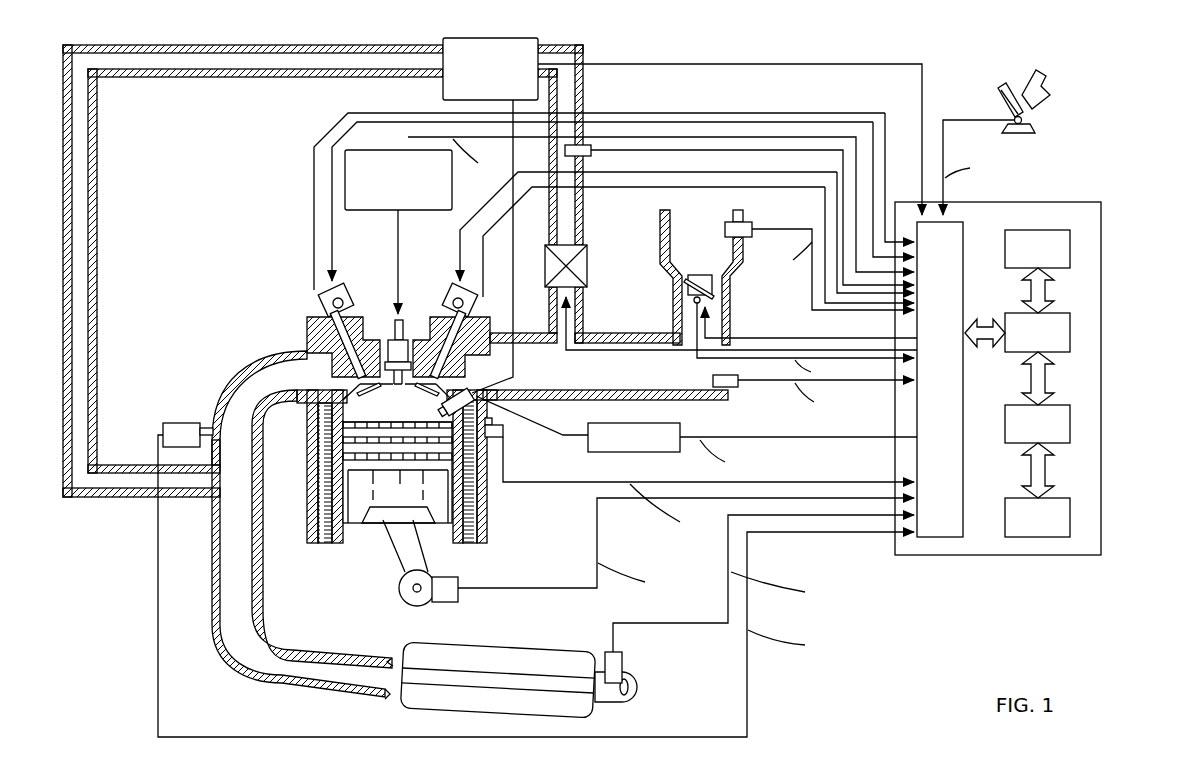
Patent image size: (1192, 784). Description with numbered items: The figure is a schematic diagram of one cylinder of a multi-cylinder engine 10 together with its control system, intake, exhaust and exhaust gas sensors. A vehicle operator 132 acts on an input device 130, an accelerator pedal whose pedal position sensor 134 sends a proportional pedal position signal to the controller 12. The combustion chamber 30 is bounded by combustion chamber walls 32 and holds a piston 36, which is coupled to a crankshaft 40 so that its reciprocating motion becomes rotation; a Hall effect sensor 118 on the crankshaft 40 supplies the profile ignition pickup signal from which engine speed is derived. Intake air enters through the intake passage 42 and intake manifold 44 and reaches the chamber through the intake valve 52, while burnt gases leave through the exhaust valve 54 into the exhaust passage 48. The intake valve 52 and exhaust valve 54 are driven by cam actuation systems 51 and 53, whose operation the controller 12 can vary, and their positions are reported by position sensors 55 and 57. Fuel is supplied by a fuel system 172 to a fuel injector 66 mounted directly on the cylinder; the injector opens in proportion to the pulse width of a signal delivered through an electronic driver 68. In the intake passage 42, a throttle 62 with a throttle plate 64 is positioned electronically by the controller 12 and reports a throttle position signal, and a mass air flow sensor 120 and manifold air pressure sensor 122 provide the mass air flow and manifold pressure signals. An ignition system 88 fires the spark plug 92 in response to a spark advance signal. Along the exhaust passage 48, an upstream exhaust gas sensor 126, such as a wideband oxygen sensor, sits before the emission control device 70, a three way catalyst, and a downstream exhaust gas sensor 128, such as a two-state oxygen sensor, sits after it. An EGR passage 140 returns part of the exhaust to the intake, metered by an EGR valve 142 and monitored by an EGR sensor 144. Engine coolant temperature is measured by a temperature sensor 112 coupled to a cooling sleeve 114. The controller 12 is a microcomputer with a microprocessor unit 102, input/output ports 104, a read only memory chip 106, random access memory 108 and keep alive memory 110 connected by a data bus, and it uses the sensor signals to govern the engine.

The engine 10 is at (243, 270).
The controller 12 is at (1097, 204).
The combustion chamber 30 is at (395, 407).
The combustion chamber walls 32 is at (338, 545).
The piston 36 is at (385, 530).
The crankshaft 40 is at (403, 604).
The intake passage 42 is at (689, 251).
The intake manifold 44 is at (628, 379).
The exhaust passage 48 is at (263, 389).
The cam actuation system 51 is at (450, 287).
The intake valve 52 is at (445, 381).
The cam actuation system 53 is at (350, 287).
The exhaust valve 54 is at (307, 350).
The position sensor 55 is at (473, 292).
The position sensor 57 is at (322, 303).
The throttle 62 is at (716, 286).
The throttle plate 64 is at (689, 284).
The fuel injector 66 is at (493, 411).
The electronic driver 68 is at (601, 452).
The emission control device 70 is at (560, 650).
The ignition system 88 is at (357, 154).
The spark plug 92 is at (404, 322).
The microprocessor unit 102 is at (1070, 331).
The input/output ports 104 is at (965, 228).
The read only memory chip 106 is at (1070, 247).
The random access memory 108 is at (1070, 427).
The keep alive memory 110 is at (1070, 514).
The temperature sensor 112 is at (495, 428).
The cooling sleeve 114 is at (490, 503).
The Hall effect sensor 118 is at (460, 604).
The mass air flow sensor 120 is at (746, 222).
The manifold air pressure sensor 122 is at (740, 388).
The upstream exhaust gas sensor 126 is at (163, 428).
The downstream exhaust gas sensor 128 is at (625, 660).
The input device 130 is at (1000, 100).
The vehicle operator 132 is at (1050, 92).
The pedal position sensor 134 is at (1030, 121).
The EGR passage 140 is at (312, 46).
The EGR valve 142 is at (587, 268).
The EGR sensor 144 is at (586, 158).
The fuel system 172 is at (503, 38).